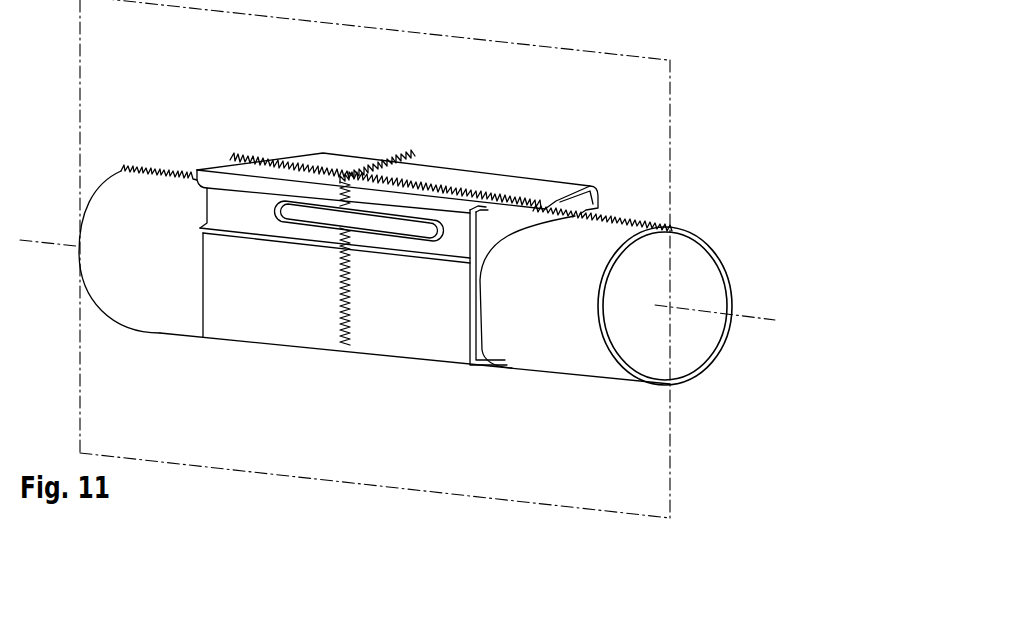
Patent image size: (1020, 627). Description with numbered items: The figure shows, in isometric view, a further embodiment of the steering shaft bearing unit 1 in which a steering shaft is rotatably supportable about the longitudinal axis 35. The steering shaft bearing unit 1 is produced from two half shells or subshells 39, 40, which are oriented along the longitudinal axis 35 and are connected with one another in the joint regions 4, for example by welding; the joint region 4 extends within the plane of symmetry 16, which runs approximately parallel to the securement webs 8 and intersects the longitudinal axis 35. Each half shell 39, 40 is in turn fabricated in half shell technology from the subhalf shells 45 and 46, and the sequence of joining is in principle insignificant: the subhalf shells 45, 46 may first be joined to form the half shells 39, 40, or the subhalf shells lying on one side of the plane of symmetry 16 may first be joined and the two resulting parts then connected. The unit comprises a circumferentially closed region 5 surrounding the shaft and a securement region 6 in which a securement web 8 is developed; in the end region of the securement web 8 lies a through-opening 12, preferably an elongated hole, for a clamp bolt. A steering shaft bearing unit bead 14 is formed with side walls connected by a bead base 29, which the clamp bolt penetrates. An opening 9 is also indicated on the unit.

The steering shaft bearing unit 1 is at (568, 151).
The joint region 4 is at (168, 168).
The circumferentially closed region 5 is at (110, 262).
The securement region 6 is at (370, 337).
The securement web 8 is at (323, 310).
The opening 9 is at (597, 188).
The through-opening 12 is at (342, 218).
The steering shaft bearing unit bead 14 is at (235, 200).
The plane of symmetry 16 is at (640, 500).
The bead base 29 is at (457, 232).
The longitudinal axis 35 is at (683, 313).
The half shell 39 is at (730, 283).
The half shell 40 is at (530, 325).
The subhalf shell 45 is at (155, 165).
The subhalf shell 46 is at (150, 303).